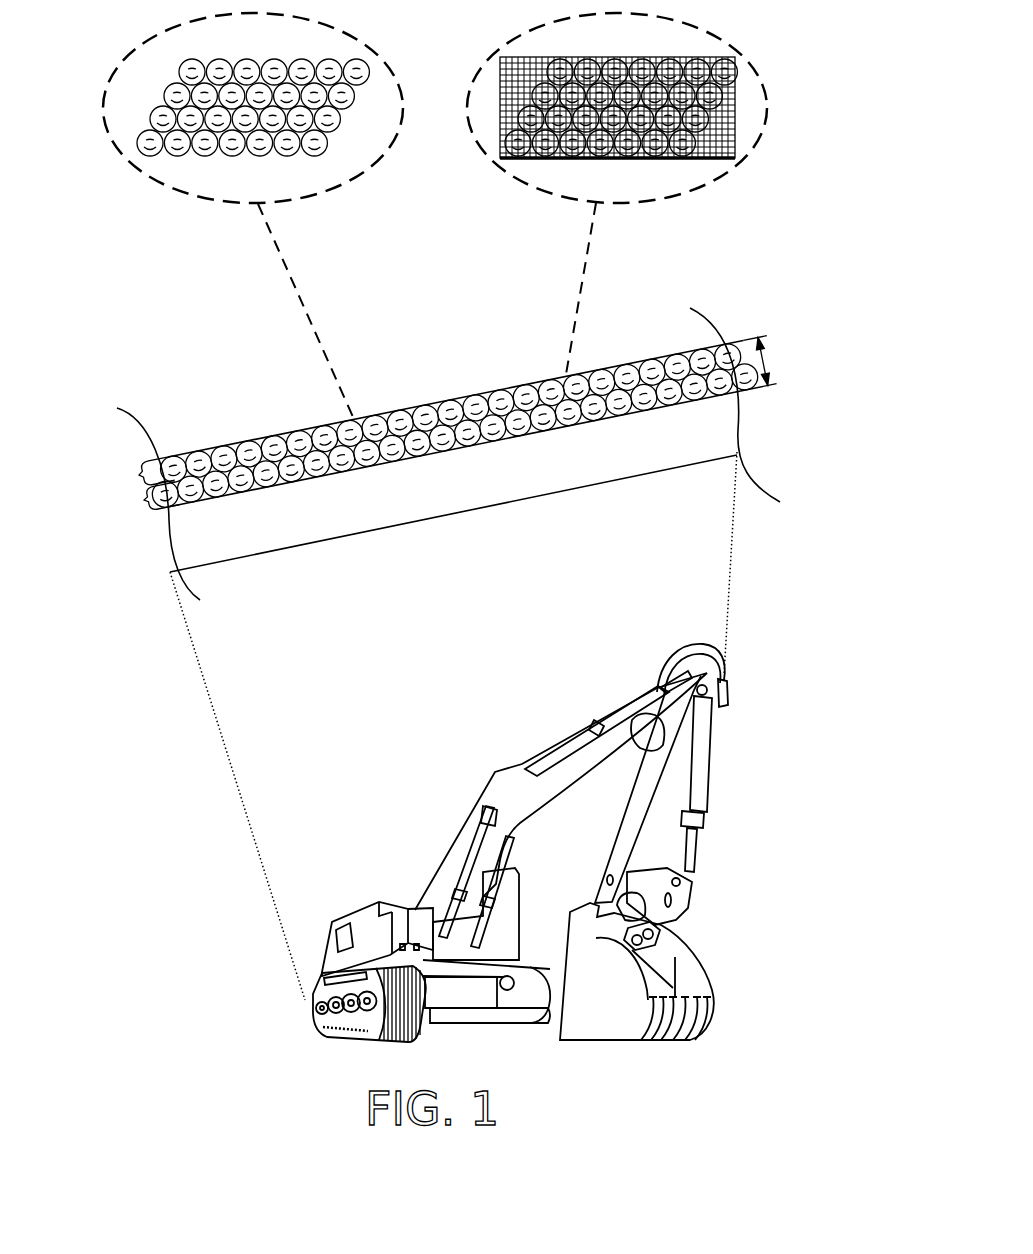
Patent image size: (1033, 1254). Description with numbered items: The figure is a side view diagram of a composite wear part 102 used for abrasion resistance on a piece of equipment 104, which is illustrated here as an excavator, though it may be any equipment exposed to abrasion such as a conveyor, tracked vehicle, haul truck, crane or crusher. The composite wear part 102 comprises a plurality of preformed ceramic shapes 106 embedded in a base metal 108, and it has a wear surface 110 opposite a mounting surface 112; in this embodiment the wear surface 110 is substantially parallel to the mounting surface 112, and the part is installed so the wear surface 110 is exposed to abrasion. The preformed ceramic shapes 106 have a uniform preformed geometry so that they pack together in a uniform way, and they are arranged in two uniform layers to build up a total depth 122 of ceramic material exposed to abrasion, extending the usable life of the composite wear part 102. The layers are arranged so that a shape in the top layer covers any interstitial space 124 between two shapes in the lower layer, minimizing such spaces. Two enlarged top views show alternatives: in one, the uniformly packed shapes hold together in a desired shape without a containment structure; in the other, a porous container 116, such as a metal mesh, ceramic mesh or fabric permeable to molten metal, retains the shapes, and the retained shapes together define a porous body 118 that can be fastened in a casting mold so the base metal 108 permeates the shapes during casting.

The composite wear part 102 is at (226, 392).
The piece of equipment 104 is at (458, 750).
The preformed ceramic shapes 106 is at (409, 289).
The base metal 108 is at (347, 422).
The wear surface 110 is at (429, 394).
The mounting surface 112 is at (431, 526).
The porous container 116 is at (698, 58).
The porous body 118 is at (620, 160).
The total depth 122 is at (760, 362).
The interstitial space 124 is at (310, 458).